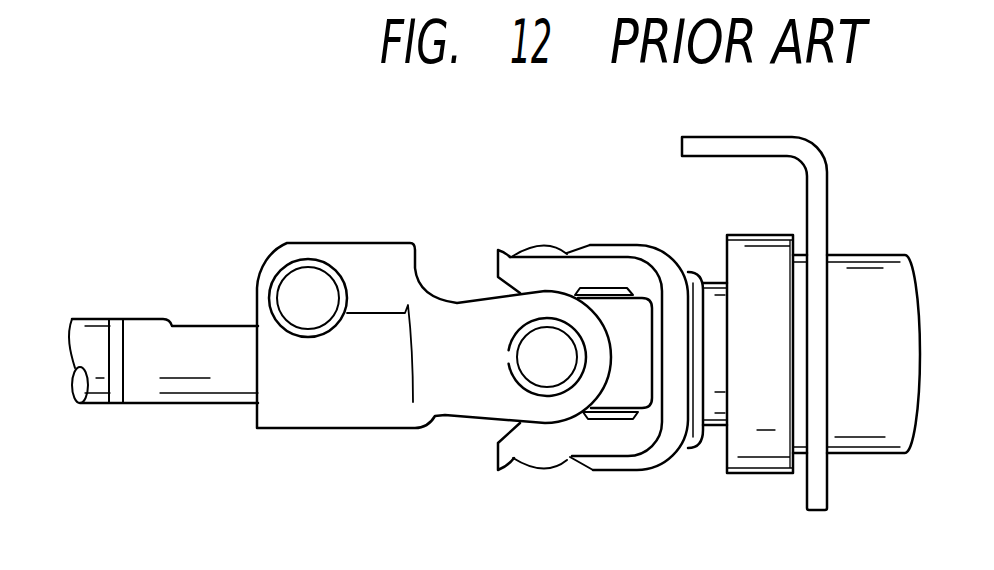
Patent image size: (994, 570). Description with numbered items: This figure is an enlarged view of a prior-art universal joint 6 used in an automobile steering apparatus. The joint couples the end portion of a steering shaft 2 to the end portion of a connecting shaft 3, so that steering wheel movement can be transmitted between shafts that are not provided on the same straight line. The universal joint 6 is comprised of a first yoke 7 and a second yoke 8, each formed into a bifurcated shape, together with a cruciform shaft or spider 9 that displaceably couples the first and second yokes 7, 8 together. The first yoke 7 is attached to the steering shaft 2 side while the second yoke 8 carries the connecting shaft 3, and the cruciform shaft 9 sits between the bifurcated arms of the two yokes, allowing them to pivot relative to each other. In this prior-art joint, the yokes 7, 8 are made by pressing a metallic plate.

The steering shaft 2 is at (848, 265).
The connecting shaft 3 is at (213, 395).
The universal joint 6 is at (504, 226).
The first yoke 7 is at (580, 250).
The second yoke 8 is at (457, 405).
The cruciform shaft 9 is at (547, 377).